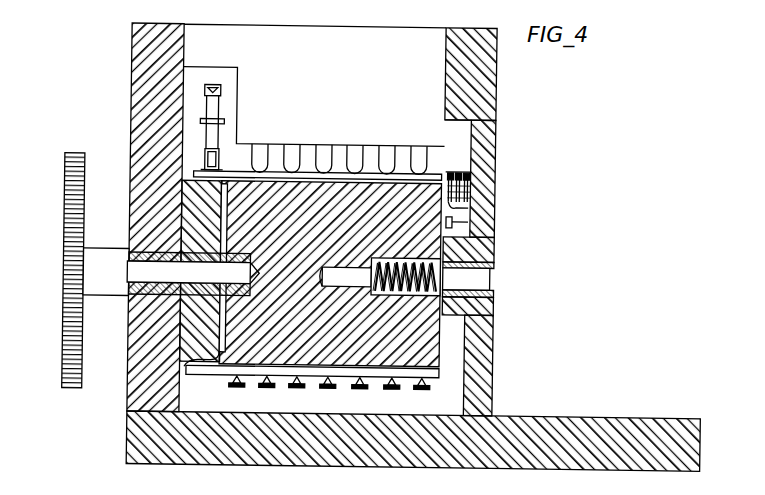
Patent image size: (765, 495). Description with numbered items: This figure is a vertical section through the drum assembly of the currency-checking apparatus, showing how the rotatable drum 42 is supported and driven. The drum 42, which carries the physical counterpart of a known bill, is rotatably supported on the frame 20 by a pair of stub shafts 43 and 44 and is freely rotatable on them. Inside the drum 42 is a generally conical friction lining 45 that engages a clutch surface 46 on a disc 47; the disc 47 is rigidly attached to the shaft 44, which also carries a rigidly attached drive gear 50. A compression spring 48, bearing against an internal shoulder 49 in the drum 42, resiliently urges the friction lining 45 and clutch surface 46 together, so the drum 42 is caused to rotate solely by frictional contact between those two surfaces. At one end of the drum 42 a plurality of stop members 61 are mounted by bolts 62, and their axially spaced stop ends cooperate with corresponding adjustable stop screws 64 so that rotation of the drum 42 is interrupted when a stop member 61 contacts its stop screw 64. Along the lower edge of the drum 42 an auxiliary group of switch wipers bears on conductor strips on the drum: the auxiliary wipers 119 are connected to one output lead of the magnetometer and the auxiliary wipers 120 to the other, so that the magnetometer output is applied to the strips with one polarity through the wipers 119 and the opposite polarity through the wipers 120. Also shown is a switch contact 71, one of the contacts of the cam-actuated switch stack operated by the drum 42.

The frame 20 is at (130, 82).
The drive gear 50 is at (64, 159).
The switch contact 71 is at (226, 93).
The rotatable drum 42 is at (252, 352).
The stub shaft 43 is at (345, 252).
The stub shaft 44 is at (258, 267).
The friction lining 45 is at (235, 240).
The clutch surface 46 is at (228, 347).
The disc 47 is at (187, 369).
The compression spring 48 is at (396, 257).
The internal shoulder 49 is at (376, 296).
The stop member 61 is at (470, 210).
The bolt 62 is at (453, 221).
The adjustable stop screw 64 is at (468, 176).
The auxiliary switch wiper 119 is at (239, 392).
The auxiliary wiper 120 is at (283, 399).